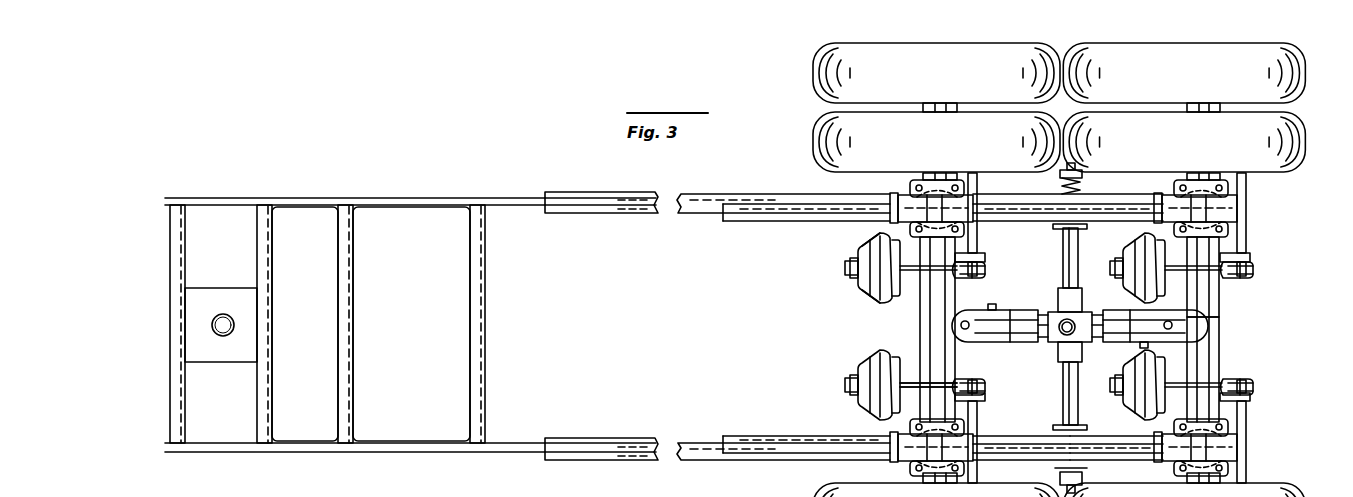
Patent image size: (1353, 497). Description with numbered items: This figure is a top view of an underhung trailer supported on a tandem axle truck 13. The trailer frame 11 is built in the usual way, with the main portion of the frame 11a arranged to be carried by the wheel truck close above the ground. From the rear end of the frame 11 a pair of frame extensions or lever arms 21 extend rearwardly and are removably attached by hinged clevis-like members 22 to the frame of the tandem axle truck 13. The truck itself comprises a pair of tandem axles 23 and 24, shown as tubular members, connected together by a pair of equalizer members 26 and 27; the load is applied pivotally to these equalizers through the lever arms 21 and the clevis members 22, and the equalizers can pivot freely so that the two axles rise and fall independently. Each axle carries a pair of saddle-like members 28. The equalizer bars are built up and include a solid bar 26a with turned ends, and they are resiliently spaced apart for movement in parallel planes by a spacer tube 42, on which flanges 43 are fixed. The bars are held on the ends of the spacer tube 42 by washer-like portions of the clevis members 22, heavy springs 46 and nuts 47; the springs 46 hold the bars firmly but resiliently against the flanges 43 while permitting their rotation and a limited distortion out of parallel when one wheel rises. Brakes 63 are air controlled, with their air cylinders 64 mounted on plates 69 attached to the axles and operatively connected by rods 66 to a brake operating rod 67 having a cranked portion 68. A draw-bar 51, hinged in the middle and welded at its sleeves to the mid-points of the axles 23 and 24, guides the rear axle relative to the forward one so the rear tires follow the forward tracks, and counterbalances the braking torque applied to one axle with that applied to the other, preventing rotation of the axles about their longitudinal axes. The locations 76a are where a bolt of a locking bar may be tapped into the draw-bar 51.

The frame 11 is at (603, 215).
The main portion of the frame 11a is at (585, 462).
The tandem axle truck 13 is at (1215, 365).
The lever arms 21 is at (836, 215).
The clevis-like members 22 is at (1055, 469).
The tandem axle 23 is at (920, 305).
The tandem axle 24 is at (1218, 292).
The equalizer member 26 is at (1128, 462).
The solid bar 26a is at (1008, 448).
The equalizer member 27 is at (1115, 218).
The saddle-like members 28 is at (957, 445).
The spacer tube 42 is at (1080, 388).
The flanges 43 is at (1081, 428).
The springs 46 is at (1083, 474).
The nuts 47 is at (1078, 487).
The draw-bar 51 is at (1010, 308).
The brakes 63 is at (868, 281).
The air cylinders 64 is at (862, 298).
The rods 66 is at (964, 318).
The brake operating rod 67 is at (978, 243).
The cranked portion 68 is at (985, 266).
The plates 69 is at (912, 375).
The tapped location in the draw-bar 76a is at (968, 333).